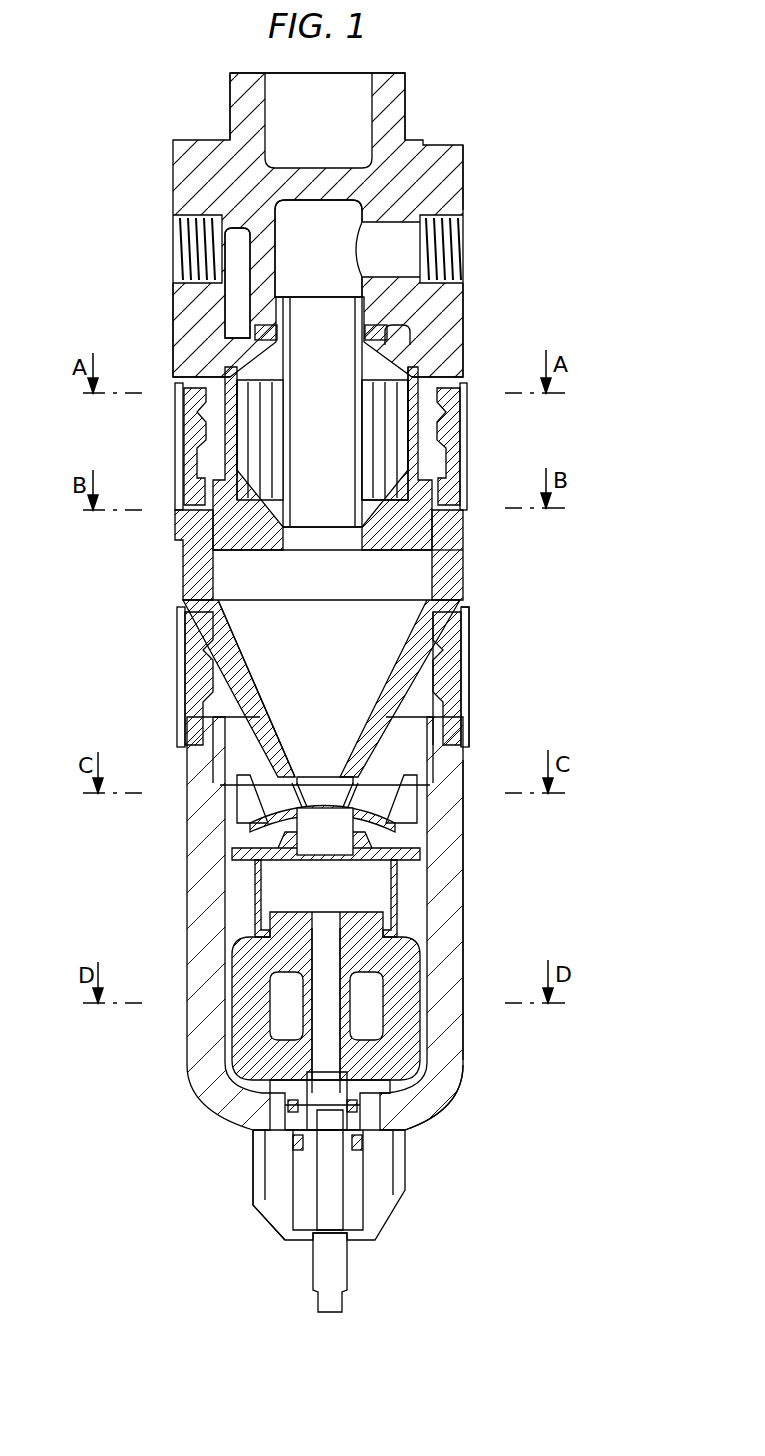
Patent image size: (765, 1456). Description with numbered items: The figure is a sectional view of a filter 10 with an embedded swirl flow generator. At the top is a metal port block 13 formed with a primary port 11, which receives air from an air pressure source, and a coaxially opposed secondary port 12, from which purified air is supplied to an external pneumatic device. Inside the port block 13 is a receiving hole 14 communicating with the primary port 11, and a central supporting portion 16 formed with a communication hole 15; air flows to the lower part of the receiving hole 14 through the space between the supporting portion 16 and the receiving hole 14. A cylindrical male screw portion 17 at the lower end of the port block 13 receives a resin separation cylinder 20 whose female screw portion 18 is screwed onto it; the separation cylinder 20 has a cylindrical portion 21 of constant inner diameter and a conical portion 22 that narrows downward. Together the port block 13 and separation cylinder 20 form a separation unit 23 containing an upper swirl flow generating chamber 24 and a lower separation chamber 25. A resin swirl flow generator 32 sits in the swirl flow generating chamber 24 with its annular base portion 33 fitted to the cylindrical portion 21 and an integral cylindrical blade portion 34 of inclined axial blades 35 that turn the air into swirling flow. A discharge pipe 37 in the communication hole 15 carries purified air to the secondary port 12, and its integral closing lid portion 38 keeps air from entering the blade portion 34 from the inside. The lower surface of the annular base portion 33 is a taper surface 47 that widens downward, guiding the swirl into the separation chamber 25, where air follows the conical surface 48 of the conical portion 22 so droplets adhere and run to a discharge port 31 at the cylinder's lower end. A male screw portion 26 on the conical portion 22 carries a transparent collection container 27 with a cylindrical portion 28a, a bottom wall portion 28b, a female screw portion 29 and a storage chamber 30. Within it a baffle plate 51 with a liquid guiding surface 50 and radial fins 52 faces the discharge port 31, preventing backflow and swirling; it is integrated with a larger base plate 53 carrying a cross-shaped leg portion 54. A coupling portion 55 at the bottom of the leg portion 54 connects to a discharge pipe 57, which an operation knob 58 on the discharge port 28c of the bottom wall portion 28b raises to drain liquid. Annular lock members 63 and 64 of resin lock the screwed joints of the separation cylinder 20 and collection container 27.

The filter 10 is at (440, 128).
The primary port 11 is at (185, 222).
The secondary port 12 is at (452, 285).
The port block 13 is at (430, 160).
The receiving hole 14 is at (210, 322).
The communication hole 15 is at (318, 212).
The supporting portion 16 is at (240, 290).
The male screw portion 17 is at (390, 440).
The female screw portion 18 is at (455, 480).
The separation cylinder 20 is at (463, 540).
The cylindrical portion 21 is at (200, 548).
The conical portion 22 is at (437, 760).
The separation unit 23 is at (470, 320).
The swirl flow generating chamber 24 is at (425, 340).
The separation chamber 25 is at (320, 610).
The male screw portion 26 is at (442, 680).
The collection container 27 is at (463, 890).
The cylindrical portion 28a is at (452, 915).
The bottom wall portion 28b is at (402, 1118).
The discharge port 28c is at (260, 1150).
The female screw portion 29 is at (452, 695).
The storage chamber 30 is at (255, 890).
The discharge port 31 is at (300, 775).
The swirl flow generator 32 is at (415, 405).
The annular base portion 33 is at (420, 500).
The cylindrical blade portion 34 is at (235, 415).
The blades 35 is at (420, 460).
The discharge pipe 37 is at (265, 520).
The closing lid portion 38 is at (258, 332).
The taper surface 47 is at (430, 555).
The conical surface 48 is at (288, 737).
The liquid guiding surface 50 is at (397, 800).
The baffle plate 51 is at (260, 828).
The fins 52 is at (265, 805).
The base plate 53 is at (397, 855).
The leg portion 54 is at (402, 1035).
The coupling portion 55 is at (285, 1110).
The discharge pipe 57 is at (347, 1250).
The operation knob 58 is at (402, 1178).
The annular lock member 63 is at (178, 452).
The annular lock member 64 is at (178, 657).